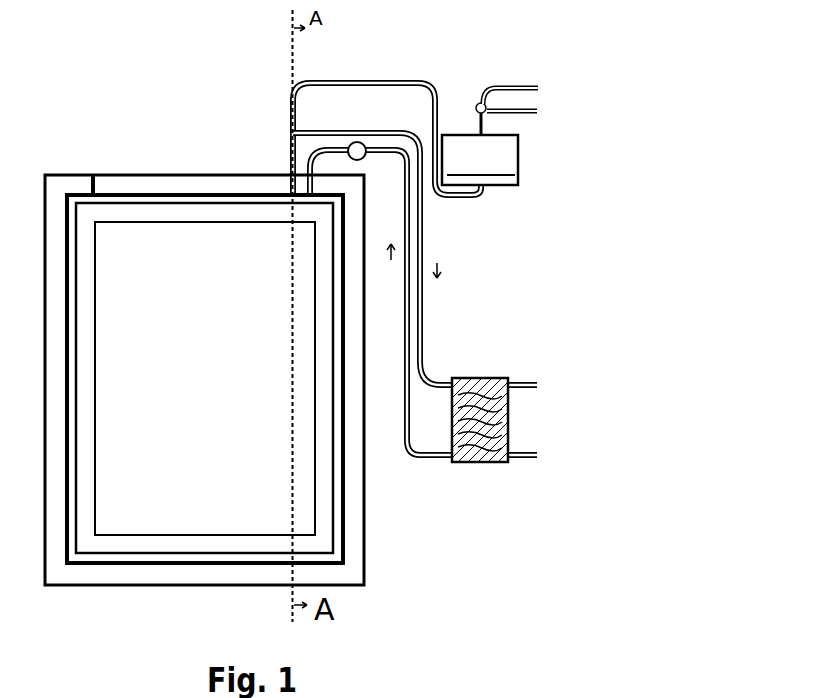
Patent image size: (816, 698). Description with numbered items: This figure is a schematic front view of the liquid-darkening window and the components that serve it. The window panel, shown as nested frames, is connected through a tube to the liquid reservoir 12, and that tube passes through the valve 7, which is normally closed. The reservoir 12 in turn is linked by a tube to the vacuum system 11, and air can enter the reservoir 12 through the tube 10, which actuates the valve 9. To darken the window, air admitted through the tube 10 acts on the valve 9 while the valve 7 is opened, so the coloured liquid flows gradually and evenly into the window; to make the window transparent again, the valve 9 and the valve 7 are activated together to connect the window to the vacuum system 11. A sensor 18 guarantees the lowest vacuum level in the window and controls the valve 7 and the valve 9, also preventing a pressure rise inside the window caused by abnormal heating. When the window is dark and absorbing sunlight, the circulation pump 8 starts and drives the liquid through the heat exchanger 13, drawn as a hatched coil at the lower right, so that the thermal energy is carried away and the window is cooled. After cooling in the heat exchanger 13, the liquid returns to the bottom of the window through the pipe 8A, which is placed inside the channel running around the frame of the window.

The valve 7 is at (292, 100).
The circulation pump 8 is at (350, 143).
The pipe 8A is at (340, 557).
The valve 9 is at (93, 175).
The tube 10 is at (547, 83).
The vacuum system 11 is at (540, 110).
The reservoir 12 is at (515, 147).
The heat exchanger 13 is at (505, 380).
The sensor 18 is at (291, 157).